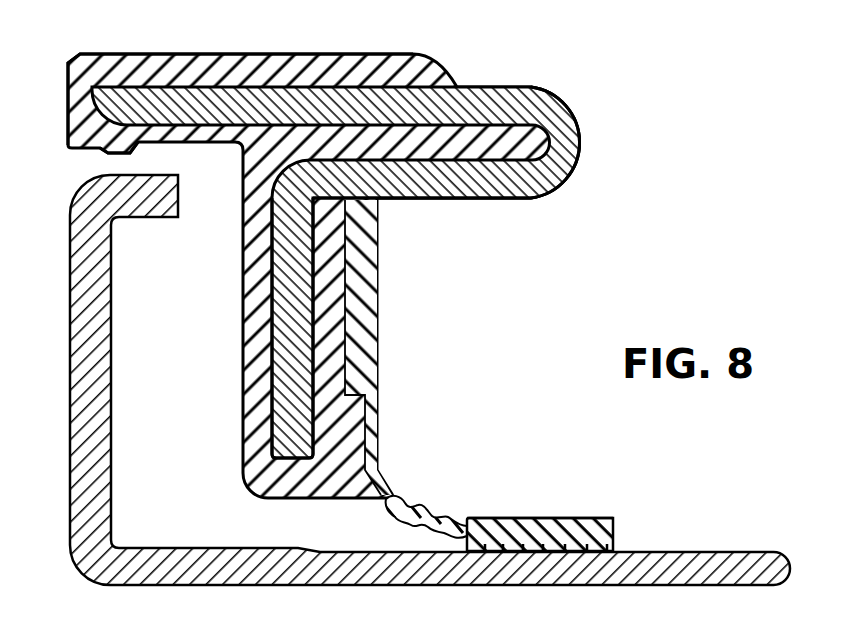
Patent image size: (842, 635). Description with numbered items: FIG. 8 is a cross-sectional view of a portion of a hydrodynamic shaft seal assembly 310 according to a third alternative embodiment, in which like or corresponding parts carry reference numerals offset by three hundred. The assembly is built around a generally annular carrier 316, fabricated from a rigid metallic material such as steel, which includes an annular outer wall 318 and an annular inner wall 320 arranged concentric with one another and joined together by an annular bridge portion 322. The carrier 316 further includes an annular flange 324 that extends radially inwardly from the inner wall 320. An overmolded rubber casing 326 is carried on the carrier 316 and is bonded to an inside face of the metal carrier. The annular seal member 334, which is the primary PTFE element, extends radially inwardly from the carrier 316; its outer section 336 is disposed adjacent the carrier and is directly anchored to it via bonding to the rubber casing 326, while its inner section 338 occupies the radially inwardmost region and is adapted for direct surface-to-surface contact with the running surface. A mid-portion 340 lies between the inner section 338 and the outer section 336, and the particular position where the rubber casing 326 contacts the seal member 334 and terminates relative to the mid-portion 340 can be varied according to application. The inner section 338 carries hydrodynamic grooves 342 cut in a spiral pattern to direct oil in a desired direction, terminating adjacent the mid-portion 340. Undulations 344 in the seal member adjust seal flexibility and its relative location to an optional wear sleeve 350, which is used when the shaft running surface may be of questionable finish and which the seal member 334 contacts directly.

The seal assembly 310 is at (421, 317).
The carrier 316 is at (421, 317).
The outer wall 318 is at (421, 317).
The inner wall 320 is at (423, 199).
The bridge portion 322 is at (590, 142).
The flange 324 is at (270, 333).
The rubber casing 326 is at (106, 53).
The seal member 334 is at (421, 317).
The outer section 336 is at (385, 199).
The inner section 338 is at (613, 512).
The mid-portion 340 is at (394, 475).
The hydrodynamic grooves 342 is at (553, 552).
The undulations 344 is at (432, 538).
The wear sleeve 350 is at (707, 551).